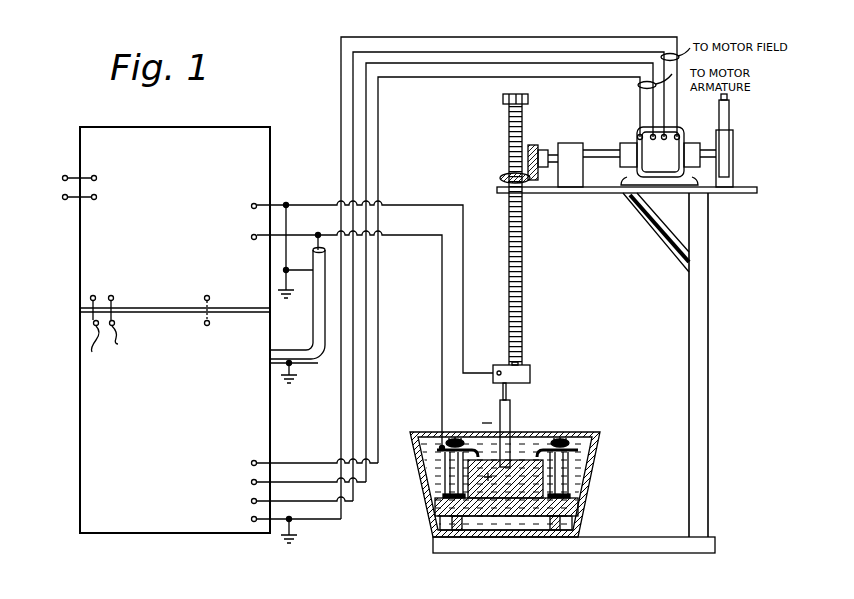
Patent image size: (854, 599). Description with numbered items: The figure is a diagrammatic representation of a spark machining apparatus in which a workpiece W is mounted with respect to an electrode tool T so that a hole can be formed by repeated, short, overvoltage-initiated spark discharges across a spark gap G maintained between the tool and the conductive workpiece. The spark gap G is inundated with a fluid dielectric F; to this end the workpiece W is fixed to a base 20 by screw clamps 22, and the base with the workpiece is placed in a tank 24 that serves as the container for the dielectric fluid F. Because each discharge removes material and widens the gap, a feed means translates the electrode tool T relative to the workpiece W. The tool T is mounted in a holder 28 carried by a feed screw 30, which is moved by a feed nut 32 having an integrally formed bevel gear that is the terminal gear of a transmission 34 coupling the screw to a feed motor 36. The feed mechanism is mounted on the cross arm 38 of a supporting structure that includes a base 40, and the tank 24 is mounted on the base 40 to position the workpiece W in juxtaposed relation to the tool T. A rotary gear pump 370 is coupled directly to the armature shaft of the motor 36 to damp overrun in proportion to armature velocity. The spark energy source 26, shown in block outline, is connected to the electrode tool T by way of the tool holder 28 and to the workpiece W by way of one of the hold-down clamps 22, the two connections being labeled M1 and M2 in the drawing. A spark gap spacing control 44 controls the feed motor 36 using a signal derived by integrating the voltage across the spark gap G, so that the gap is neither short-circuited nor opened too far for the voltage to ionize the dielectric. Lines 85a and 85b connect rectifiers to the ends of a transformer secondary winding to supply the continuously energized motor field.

The spark energy source 26 is at (273, 152).
The spark gap spacing control 44 is at (271, 428).
The line 85a is at (113, 358).
The line 85b is at (149, 346).
The electrode lead M1 is at (397, 253).
The carriage lead M2 is at (405, 204).
The feed nut 32 is at (498, 182).
The transmission 34 is at (566, 141).
The feed motor 36 is at (634, 134).
The rotary gear pump 370 is at (733, 128).
The cross arm 38 is at (594, 195).
The feed screw 30 is at (525, 262).
The holder 28 is at (530, 372).
The electrode tool T is at (545, 388).
The spark gap G is at (515, 454).
The screw clamps 22 is at (564, 440).
The fluid dielectric F is at (582, 440).
The tank 24 is at (592, 470).
The base 20 is at (580, 500).
The base 40 is at (598, 537).
The workpiece W is at (474, 562).